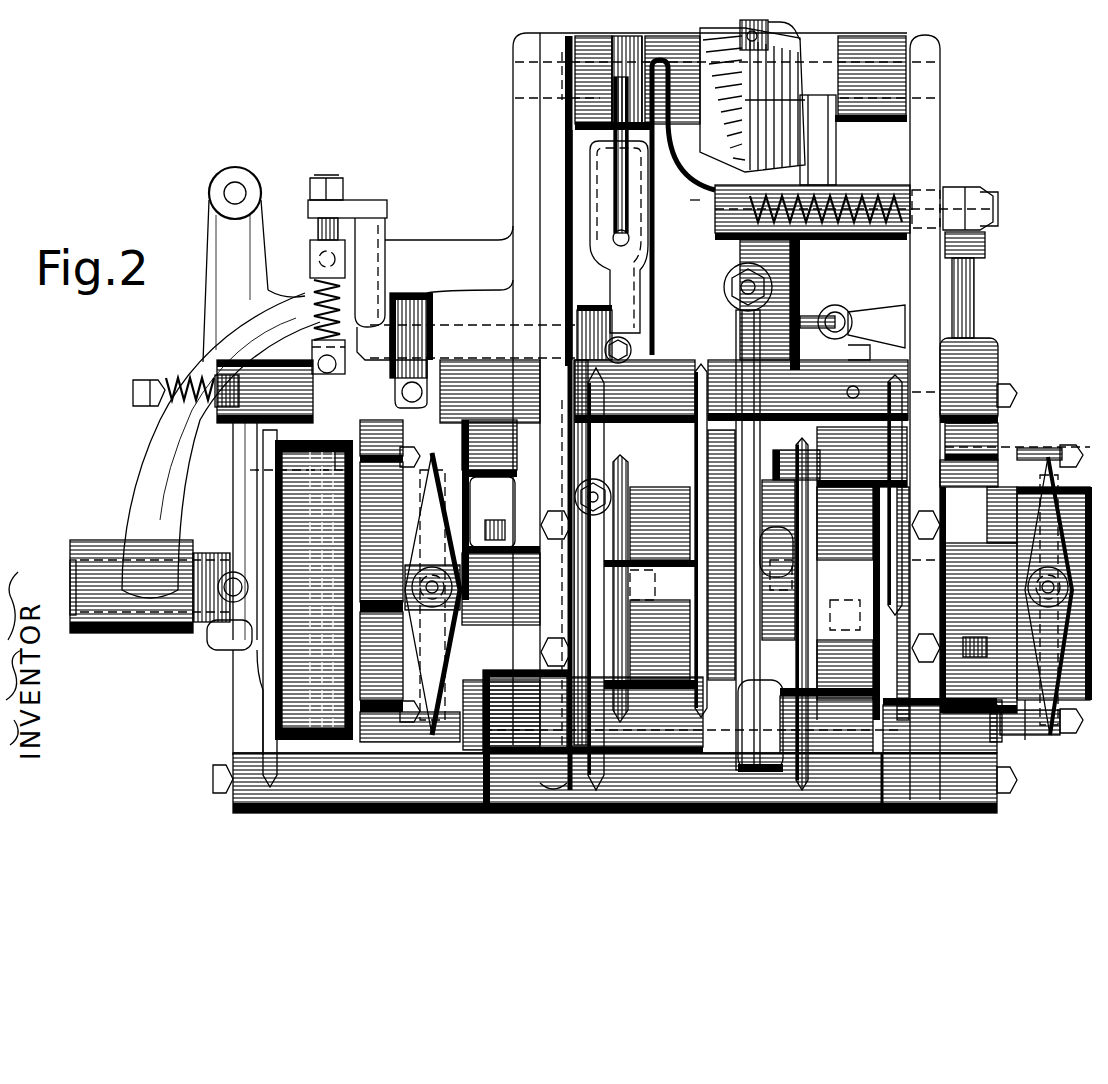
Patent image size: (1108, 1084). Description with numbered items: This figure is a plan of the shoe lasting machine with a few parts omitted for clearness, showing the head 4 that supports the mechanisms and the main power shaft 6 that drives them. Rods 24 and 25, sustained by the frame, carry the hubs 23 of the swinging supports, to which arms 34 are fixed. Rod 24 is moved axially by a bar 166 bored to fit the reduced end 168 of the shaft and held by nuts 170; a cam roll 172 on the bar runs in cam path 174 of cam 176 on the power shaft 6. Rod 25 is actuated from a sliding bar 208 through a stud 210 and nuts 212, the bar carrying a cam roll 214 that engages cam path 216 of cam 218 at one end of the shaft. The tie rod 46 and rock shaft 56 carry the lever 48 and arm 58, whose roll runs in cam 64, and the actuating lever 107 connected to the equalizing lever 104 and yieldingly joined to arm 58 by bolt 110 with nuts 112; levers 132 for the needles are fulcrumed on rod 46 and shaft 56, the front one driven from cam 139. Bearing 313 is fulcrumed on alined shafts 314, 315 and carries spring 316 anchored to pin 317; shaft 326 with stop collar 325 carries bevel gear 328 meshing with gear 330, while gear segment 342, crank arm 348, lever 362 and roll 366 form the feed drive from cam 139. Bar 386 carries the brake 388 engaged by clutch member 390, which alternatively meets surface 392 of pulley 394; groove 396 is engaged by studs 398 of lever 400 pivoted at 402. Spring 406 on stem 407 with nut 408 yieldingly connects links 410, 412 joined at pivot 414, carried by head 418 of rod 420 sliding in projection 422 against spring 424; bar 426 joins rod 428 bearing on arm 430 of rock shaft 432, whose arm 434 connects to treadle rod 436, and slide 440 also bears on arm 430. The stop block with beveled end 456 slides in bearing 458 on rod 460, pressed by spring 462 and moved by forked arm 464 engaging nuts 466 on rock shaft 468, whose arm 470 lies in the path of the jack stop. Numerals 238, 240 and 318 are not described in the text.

The head 4 is at (928, 182).
The main power shaft 6 is at (68, 578).
The hub 23 is at (878, 702).
The rod 24 is at (480, 715).
The rod 25 is at (1036, 735).
The arm 34 is at (650, 560).
The tie rod 46 is at (760, 796).
The lever 48 is at (504, 364).
The rock shaft 56 is at (1018, 393).
The arm 58 is at (935, 455).
The cam 64 is at (860, 652).
The equalizing lever 104 is at (880, 474).
The actuating lever 107 is at (768, 440).
The bolt 110 is at (744, 304).
The nuts 112 is at (742, 312).
The lever 132 is at (851, 364).
The cam 139 is at (640, 642).
The bar 166 is at (402, 683).
The reduced end 168 is at (403, 718).
The nuts 170 is at (405, 724).
The cam roll 172 is at (435, 648).
The cam path 174 is at (422, 650).
The cam 176 is at (403, 534).
The sliding bar 208 is at (1043, 740).
The stud 210 is at (1074, 726).
The nuts 212 is at (1050, 733).
The cam roll 214 is at (1086, 490).
The cam path 216 is at (1043, 542).
The cam 218 is at (1002, 518).
The bolt 238 is at (979, 651).
The bolt 240 is at (496, 528).
The bearing 313 is at (801, 260).
The shaft 314 is at (548, 84).
The shaft 315 is at (922, 82).
The coiled spring 316 is at (853, 308).
The pin 317 is at (813, 318).
The rod 318 is at (890, 321).
The stop collar 325 is at (762, 62).
The shaft 326 is at (776, 55).
The bevel gear 328 is at (786, 147).
The bevel gear 330 is at (684, 46).
The gear segment 342 is at (628, 42).
The bifurcated crank arm 348 is at (614, 143).
The lever 362 is at (597, 223).
The roll 366 is at (748, 538).
The bar 386 is at (247, 722).
The ring brake 388 is at (285, 476).
The clutch member 390 is at (312, 470).
The conical surface 392 is at (334, 462).
The driving pulley 394 is at (275, 684).
The circular groove 396 is at (236, 646).
The studs 398 is at (184, 558).
The lever 400 is at (205, 455).
The pivot 402 is at (232, 186).
The spring 406 is at (190, 376).
The stem 407 is at (138, 397).
The nut 408 is at (148, 378).
The link 410 is at (333, 356).
The link 412 is at (414, 350).
The central pivot 414 is at (318, 360).
The head 418 is at (322, 342).
The rod 420 is at (320, 228).
The projection 422 is at (333, 252).
The spring 424 is at (316, 254).
The bar 426 is at (376, 212).
The rod 428 is at (384, 234).
The arm 430 is at (374, 330).
The rock shaft 432 is at (448, 333).
The arm 434 is at (660, 266).
The treadle rod 436 is at (690, 206).
The slide 440 is at (386, 433).
The beveled end 456 is at (673, 186).
The bearing 458 is at (876, 187).
The rod 460 is at (1000, 212).
The spring 462 is at (838, 204).
The forked arm 464 is at (976, 232).
The nuts 466 is at (986, 195).
The rock shaft 468 is at (963, 273).
The arm 470 is at (992, 374).